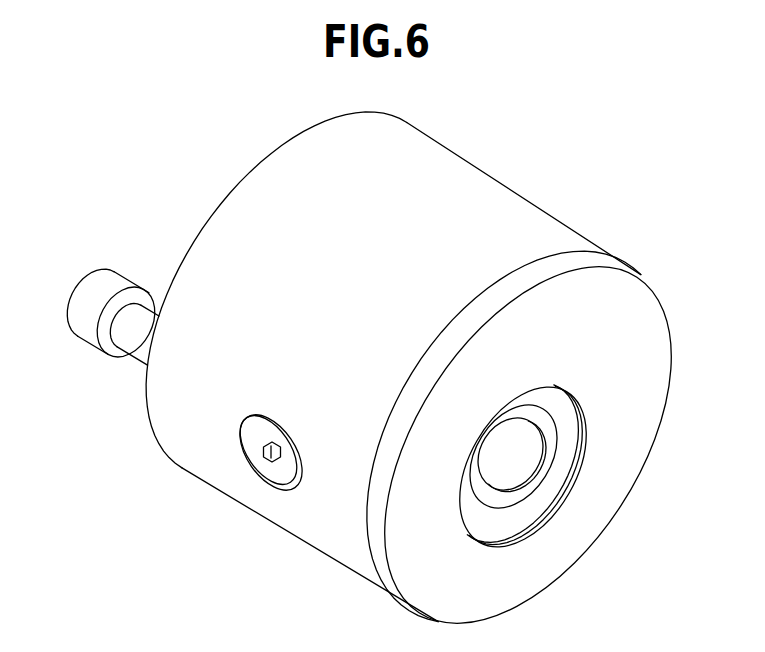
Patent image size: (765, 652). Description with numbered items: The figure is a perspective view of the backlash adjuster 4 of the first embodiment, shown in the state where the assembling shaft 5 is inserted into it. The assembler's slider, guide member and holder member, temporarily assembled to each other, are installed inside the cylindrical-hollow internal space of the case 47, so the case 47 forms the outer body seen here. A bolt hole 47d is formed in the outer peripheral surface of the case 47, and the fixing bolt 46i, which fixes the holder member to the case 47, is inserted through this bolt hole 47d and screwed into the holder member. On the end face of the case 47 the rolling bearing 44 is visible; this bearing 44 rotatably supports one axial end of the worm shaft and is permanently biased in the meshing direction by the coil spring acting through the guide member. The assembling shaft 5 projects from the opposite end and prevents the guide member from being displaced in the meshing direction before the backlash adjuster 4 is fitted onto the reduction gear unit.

The backlash adjuster 4 is at (493, 147).
The assembling shaft 5 is at (131, 260).
The rolling bearing 44 is at (552, 488).
The case 47 is at (518, 224).
The bolt hole 47d is at (281, 485).
The fixing bolt 46i is at (261, 453).